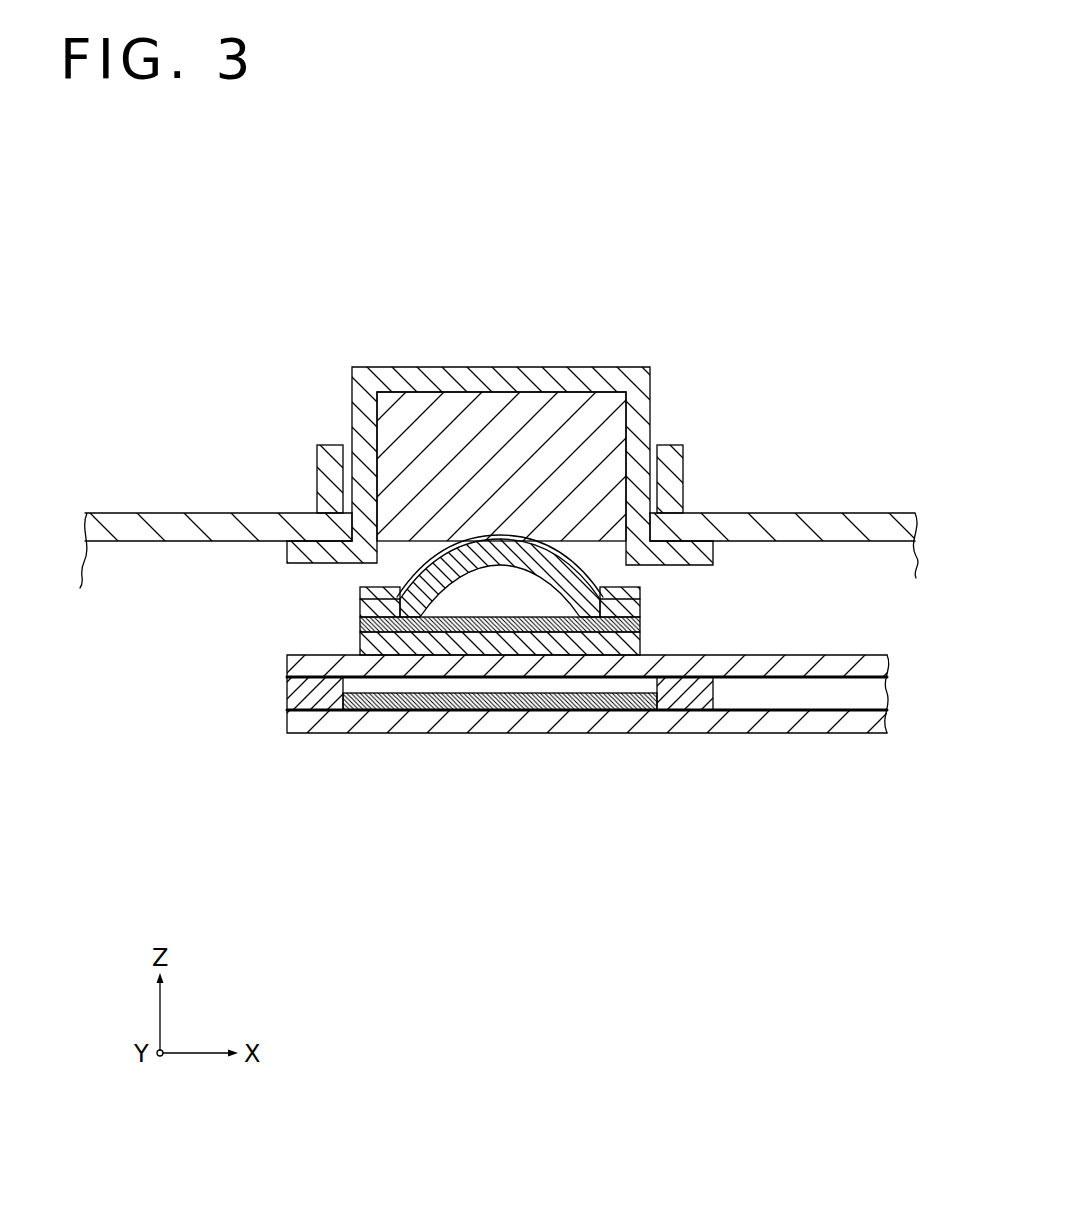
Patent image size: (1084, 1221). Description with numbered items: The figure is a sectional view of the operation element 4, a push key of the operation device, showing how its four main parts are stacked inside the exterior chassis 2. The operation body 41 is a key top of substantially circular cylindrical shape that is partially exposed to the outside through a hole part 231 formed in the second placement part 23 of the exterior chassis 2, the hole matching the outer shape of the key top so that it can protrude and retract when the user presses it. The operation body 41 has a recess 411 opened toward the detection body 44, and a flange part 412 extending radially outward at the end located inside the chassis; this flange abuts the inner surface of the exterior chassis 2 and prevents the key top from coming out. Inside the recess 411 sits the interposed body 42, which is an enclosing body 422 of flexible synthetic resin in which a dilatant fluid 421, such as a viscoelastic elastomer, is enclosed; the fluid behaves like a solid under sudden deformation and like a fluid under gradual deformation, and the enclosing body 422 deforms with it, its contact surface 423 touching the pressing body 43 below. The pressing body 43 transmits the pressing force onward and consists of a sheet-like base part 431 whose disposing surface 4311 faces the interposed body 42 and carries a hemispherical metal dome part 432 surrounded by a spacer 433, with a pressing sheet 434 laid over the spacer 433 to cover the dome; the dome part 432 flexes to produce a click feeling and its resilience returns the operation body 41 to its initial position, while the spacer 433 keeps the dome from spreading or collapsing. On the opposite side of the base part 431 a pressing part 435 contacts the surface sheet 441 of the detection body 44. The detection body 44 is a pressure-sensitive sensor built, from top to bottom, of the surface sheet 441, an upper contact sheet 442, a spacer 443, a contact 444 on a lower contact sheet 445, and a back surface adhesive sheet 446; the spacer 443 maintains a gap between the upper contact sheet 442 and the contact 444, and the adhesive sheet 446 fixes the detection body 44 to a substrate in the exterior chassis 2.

The exterior chassis 2 is at (858, 519).
The second placement part 23 is at (500, 527).
The hole part 231 is at (662, 483).
The operation element 4 is at (502, 481).
The operation body 41 is at (624, 367).
The recess 411 is at (395, 428).
The flange part 412 is at (305, 532).
The dilatant fluid 421 is at (612, 428).
The enclosing body 422 is at (412, 543).
The contact surface 423 is at (650, 576).
The interposed body 42 is at (515, 396).
The pressing body 43 is at (467, 595).
The base part 431 is at (358, 628).
The disposing surface 4311 is at (641, 623).
The dome part 432 is at (467, 570).
The spacer 433 is at (358, 600).
The pressing sheet 434 is at (600, 574).
The pressing part 435 is at (641, 643).
The detection body 44 is at (492, 697).
The surface sheet 441 is at (820, 660).
The upper contact sheet 442 is at (286, 677).
The spacer 443 is at (320, 706).
The contact 444 is at (392, 706).
The lower contact sheet 445 is at (286, 711).
The back surface adhesive sheet 446 is at (522, 722).